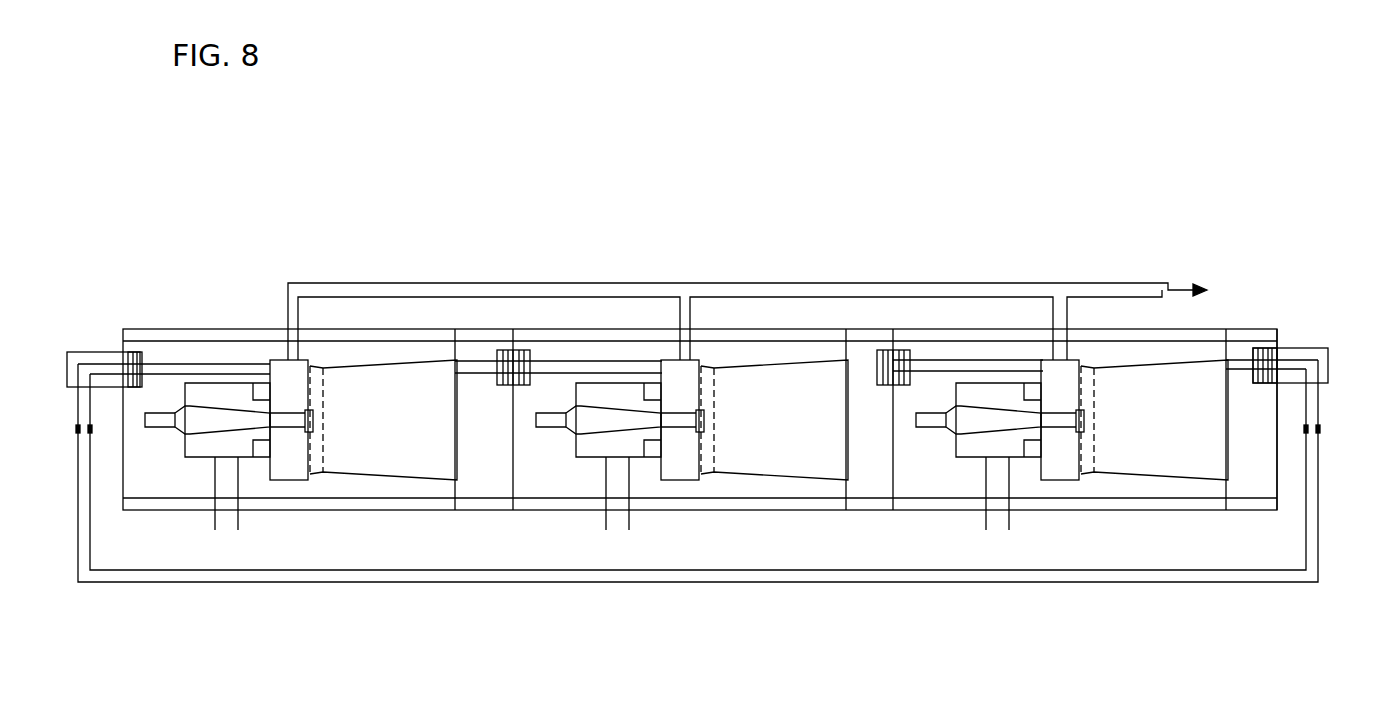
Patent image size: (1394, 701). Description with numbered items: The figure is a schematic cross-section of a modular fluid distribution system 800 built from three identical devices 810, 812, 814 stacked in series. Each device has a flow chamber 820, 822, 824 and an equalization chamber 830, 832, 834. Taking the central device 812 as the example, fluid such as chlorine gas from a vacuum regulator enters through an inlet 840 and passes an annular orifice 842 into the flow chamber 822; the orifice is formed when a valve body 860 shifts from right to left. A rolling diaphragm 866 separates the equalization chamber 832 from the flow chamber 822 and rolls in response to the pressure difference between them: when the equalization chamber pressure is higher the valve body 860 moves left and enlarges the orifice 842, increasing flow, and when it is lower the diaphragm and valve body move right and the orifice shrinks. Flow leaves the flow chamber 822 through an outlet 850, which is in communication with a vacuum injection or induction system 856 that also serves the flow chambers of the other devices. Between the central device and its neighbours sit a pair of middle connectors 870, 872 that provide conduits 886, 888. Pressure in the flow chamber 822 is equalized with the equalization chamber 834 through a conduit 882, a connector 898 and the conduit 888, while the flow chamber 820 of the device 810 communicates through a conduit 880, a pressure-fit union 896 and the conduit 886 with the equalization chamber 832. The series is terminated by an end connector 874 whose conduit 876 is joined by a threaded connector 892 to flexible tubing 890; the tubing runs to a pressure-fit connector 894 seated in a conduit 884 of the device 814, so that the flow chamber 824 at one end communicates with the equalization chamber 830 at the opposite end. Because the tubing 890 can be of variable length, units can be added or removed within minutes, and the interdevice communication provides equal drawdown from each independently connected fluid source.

The system 800 is at (925, 188).
The device 810 is at (1045, 487).
The device 812 is at (653, 472).
The device 814 is at (252, 483).
The flow chamber 820 is at (1068, 460).
The flow chamber 822 is at (680, 447).
The flow chamber 824 is at (287, 443).
The equalization chamber 830 is at (1154, 420).
The equalization chamber 832 is at (774, 420).
The equalization chamber 834 is at (383, 420).
The inlet 840 is at (618, 520).
The annular orifice 842 is at (645, 432).
The outlet 850 is at (683, 313).
The vacuum injection or induction system 856 is at (1145, 285).
The valve body 860 is at (613, 420).
The rolling diaphragm 866 is at (757, 360).
The connector 870 is at (869, 419).
The connector 872 is at (484, 419).
The end connector 874 is at (1251, 419).
The conduit 876 is at (1240, 367).
The conduit 880 is at (945, 367).
The conduit 882 is at (565, 373).
The conduit 884 is at (192, 368).
The conduit 886 is at (860, 365).
The conduit 888 is at (465, 372).
The tubing 890 is at (212, 575).
The threaded connector 892 is at (1315, 353).
The connector 894 is at (88, 358).
The union 896 is at (912, 352).
The connector 898 is at (520, 352).